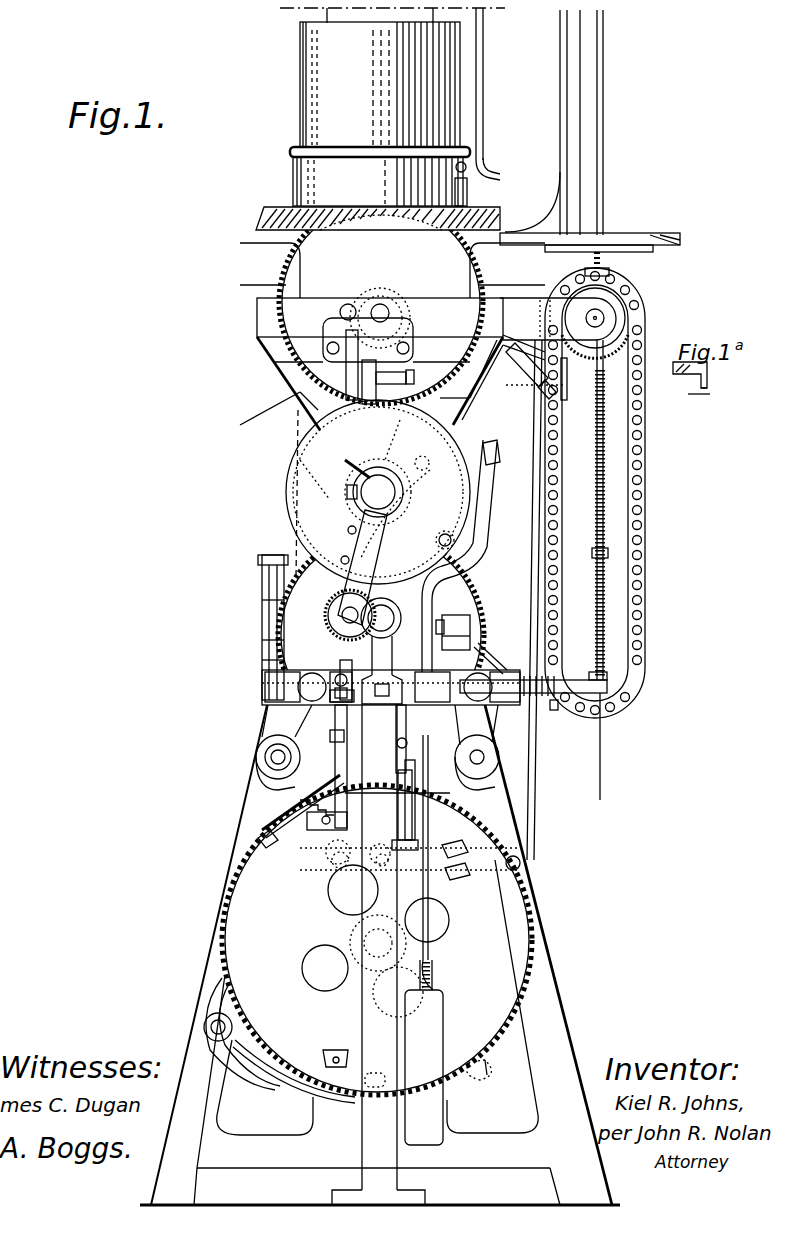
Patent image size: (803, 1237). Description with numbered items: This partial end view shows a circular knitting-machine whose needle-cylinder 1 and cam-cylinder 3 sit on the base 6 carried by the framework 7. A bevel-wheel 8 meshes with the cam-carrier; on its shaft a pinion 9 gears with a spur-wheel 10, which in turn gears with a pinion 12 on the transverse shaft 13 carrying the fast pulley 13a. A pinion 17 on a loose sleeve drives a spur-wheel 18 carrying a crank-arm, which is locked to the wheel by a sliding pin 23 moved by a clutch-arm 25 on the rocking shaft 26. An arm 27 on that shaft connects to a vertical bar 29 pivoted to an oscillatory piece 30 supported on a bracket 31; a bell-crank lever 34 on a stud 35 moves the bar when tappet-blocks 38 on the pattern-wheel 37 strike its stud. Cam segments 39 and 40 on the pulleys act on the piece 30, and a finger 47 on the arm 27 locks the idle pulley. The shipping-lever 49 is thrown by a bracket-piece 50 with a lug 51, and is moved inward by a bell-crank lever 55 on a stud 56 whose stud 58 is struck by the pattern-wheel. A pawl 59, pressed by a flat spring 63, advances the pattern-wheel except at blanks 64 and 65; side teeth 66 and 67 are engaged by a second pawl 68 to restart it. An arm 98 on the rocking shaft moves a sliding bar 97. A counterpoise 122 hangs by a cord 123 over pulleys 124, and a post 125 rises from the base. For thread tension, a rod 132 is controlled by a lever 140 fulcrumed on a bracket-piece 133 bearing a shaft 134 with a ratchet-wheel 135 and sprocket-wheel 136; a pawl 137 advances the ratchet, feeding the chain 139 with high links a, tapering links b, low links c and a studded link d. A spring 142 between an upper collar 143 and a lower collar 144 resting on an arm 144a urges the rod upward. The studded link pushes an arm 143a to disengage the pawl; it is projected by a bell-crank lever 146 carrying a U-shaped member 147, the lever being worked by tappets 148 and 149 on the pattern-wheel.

In FIG. 1, the needle-cylinder 1 is at (327, 22).
In FIG. 1, the cam-cylinder 3 is at (293, 180).
In FIG. 1, the base 6 is at (262, 217).
In FIG. 1, the framework 7 is at (262, 392).
In FIG. 1, the bevel-wheel 8 is at (282, 270).
In FIG. 1, the pinion 9 is at (376, 300).
In FIG. 1, the spur-wheel 10 is at (300, 408).
In FIG. 1, the pinion 12 is at (350, 500).
In FIG. 1, the transverse shaft 13 is at (370, 488).
In FIG. 1, the fast pulley 13a is at (360, 490).
In FIG. 1, the pinion 17 is at (340, 525).
In FIG. 1, the spur-wheel 18 is at (360, 600).
In FIG. 1, the sliding pin 23 is at (330, 618).
In FIG. 1, the clutch-arm 25 is at (262, 660).
In FIG. 1, the rocking shaft 26 is at (365, 710).
In FIG. 1, the arm 27 is at (262, 673).
In FIG. 1, the vertical bar 29 is at (262, 730).
In FIG. 1, the oscillatory piece 30 is at (330, 375).
In FIG. 1, the bracket 31 is at (257, 333).
In FIG. 1, the bell-crank lever 34 is at (335, 792).
In FIG. 1, the stud 35 is at (330, 860).
In FIG. 1, the pattern-wheel 37 is at (245, 920).
In FIG. 1, the tappet-blocks 38 is at (372, 1060).
In FIG. 1, the segment 39 is at (455, 445).
In FIG. 1, the segment 40 is at (420, 405).
In FIG. 1, the vertical finger 47 is at (262, 590).
In FIG. 1, the shipping-lever 49 is at (468, 545).
In FIG. 1, the bracket-piece 50 is at (495, 690).
In FIG. 1, the lug 51 is at (470, 636).
In FIG. 1, the bell-crank lever 55 is at (450, 793).
In FIG. 1, the stud 56 is at (420, 822).
In FIG. 1, the stud 58 is at (455, 862).
In FIG. 1, the pawl 59 is at (300, 813).
In FIG. 1, the flat spring 63 is at (480, 645).
In FIG. 1, the blank 64 is at (486, 1080).
In FIG. 1, the blank 65 is at (280, 830).
In FIG. 1, the tooth 66 is at (490, 1060).
In FIG. 1, the tooth 67 is at (262, 842).
In FIG. 1, the pawl 68 is at (262, 806).
In FIG. 1, the sliding bar 97 is at (265, 630).
In FIG. 1, the arm 98 is at (262, 683).
In FIG. 1, the counterpoise 122 is at (440, 1000).
In FIG. 1, the cord 123 is at (450, 918).
In FIG. 1, the pulleys 124 is at (520, 840).
In FIG. 1, the post 125 is at (575, 135).
In FIG. 1, the vertically-movable rod 132 is at (603, 190).
In FIG. 1, the bracket-piece 133 is at (630, 290).
In FIG. 1, the shaft 134 is at (615, 318).
In FIG. 1, the ratchet-wheel 135 is at (620, 325).
In FIG. 1, the sprocket-wheel 136 is at (640, 275).
In FIG. 1, the pawl 137 is at (500, 315).
In FIG. 1, the chain 139 is at (645, 487).
In FIG. 1, the transverse lever 140 is at (600, 268).
In FIG. 1, the spring 142 is at (605, 608).
In FIG. 1, the upper collar 143 is at (645, 540).
In FIG. 1, the arm 143a is at (480, 348).
In FIG. 1, the lower collar 144 is at (605, 678).
In FIG. 1, the arm 144a is at (565, 700).
In FIG. 1, the bell-crank lever 146 is at (524, 768).
In FIG. 1A, the bell-crank lever 146 is at (696, 375).
In FIG. 1, the U-shaped member 147 is at (548, 390).
In FIG. 1A, the U-shaped member 147 is at (710, 386).
In FIG. 1, the tappet 148 is at (345, 865).
In FIG. 1, the tappet 149 is at (385, 860).
In FIG. 1, the uniform high links a is at (645, 305).
In FIG. 1, the tapering links b is at (645, 440).
In FIG. 1A, the uniform low links c is at (699, 407).
In FIG. 1, the studded link d is at (535, 414).